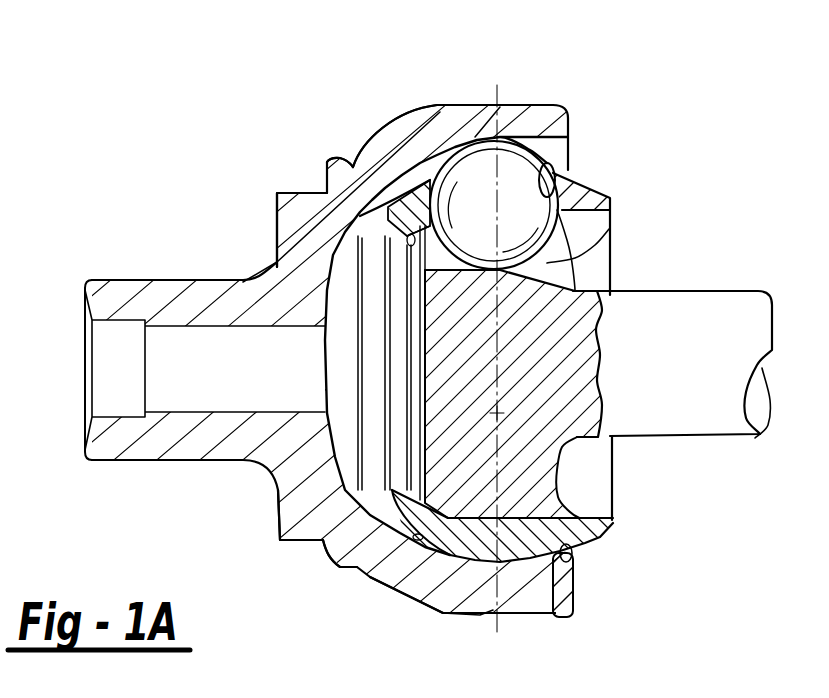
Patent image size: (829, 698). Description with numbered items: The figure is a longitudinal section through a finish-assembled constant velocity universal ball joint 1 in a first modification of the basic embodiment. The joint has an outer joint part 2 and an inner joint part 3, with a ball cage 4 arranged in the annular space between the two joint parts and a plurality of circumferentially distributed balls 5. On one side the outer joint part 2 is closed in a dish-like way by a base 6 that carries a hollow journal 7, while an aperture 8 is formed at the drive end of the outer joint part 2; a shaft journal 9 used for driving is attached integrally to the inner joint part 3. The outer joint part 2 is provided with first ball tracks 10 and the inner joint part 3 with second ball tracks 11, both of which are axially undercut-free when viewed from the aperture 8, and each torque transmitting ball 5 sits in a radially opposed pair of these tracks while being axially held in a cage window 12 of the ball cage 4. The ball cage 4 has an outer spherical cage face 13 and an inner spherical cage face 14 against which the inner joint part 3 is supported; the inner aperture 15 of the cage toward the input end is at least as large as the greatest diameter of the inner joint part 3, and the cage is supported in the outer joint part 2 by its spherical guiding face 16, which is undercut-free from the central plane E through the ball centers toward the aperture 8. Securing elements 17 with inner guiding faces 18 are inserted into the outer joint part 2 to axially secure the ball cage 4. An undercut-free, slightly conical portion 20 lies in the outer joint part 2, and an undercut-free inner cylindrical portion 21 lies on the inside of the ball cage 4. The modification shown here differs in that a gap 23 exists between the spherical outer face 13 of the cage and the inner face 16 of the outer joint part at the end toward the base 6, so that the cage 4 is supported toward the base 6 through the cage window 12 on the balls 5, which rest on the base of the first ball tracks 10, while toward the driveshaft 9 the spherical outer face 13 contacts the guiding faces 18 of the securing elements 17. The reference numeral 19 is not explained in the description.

The constant velocity universal ball joint 1 is at (289, 174).
The outer joint part 2 is at (360, 163).
The inner joint part 3 is at (578, 312).
The ball cage 4 is at (581, 178).
The balls 5 is at (478, 160).
The base 6 is at (277, 232).
The hollow journal 7 is at (163, 293).
The aperture 8 is at (585, 172).
The shaft journal 9 is at (718, 322).
The first ball tracks 10 is at (506, 150).
The second ball tracks 11 is at (585, 240).
The cage window 12 is at (546, 160).
The outer spherical cage face 13 is at (372, 178).
The inner spherical cage face 14 is at (402, 165).
The inner aperture 15 is at (612, 457).
The spherical guiding face 16 is at (390, 582).
The securing elements 17 is at (560, 610).
The inner guiding faces 18 is at (580, 545).
The cage window web 19 is at (447, 520).
The undercut-free slightly conical portion 20 is at (510, 560).
The undercut-free inner cylindrical portion 21 is at (590, 513).
The gap 23 is at (432, 145).
The central plane E is at (497, 413).